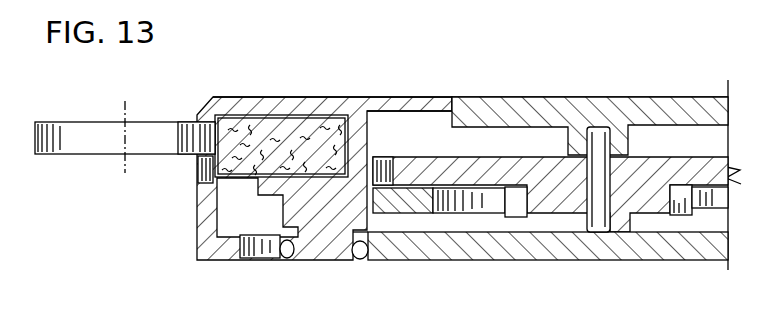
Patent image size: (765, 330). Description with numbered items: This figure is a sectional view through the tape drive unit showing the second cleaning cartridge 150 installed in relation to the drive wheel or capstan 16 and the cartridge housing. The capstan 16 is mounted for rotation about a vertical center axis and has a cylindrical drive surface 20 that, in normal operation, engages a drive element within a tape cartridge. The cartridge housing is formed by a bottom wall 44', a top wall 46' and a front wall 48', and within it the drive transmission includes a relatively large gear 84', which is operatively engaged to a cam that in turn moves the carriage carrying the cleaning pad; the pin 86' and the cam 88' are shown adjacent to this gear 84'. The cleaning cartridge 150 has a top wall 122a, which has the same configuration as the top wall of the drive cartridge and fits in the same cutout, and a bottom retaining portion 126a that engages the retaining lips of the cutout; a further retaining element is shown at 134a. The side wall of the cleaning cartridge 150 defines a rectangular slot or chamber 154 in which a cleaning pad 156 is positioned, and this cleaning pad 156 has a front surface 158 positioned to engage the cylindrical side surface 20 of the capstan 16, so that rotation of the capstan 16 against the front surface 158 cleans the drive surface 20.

The capstan 16 is at (172, 128).
The cylindrical drive surface 20 is at (87, 135).
The front surface 158 is at (208, 165).
The front wall 48' is at (277, 178).
The rectangular slot or chamber 154 is at (308, 118).
The cleaning pad 156 is at (280, 115).
The second cleaning cartridge 150 is at (391, 86).
The top wall 122a is at (407, 103).
The gear 84' is at (550, 140).
The top wall 46' is at (590, 102).
The pin 86' is at (625, 140).
The plunger 88' is at (492, 251).
The bottom wall 44' is at (540, 273).
The O-ring 134a is at (290, 253).
The bottom retaining portion 126a is at (357, 255).